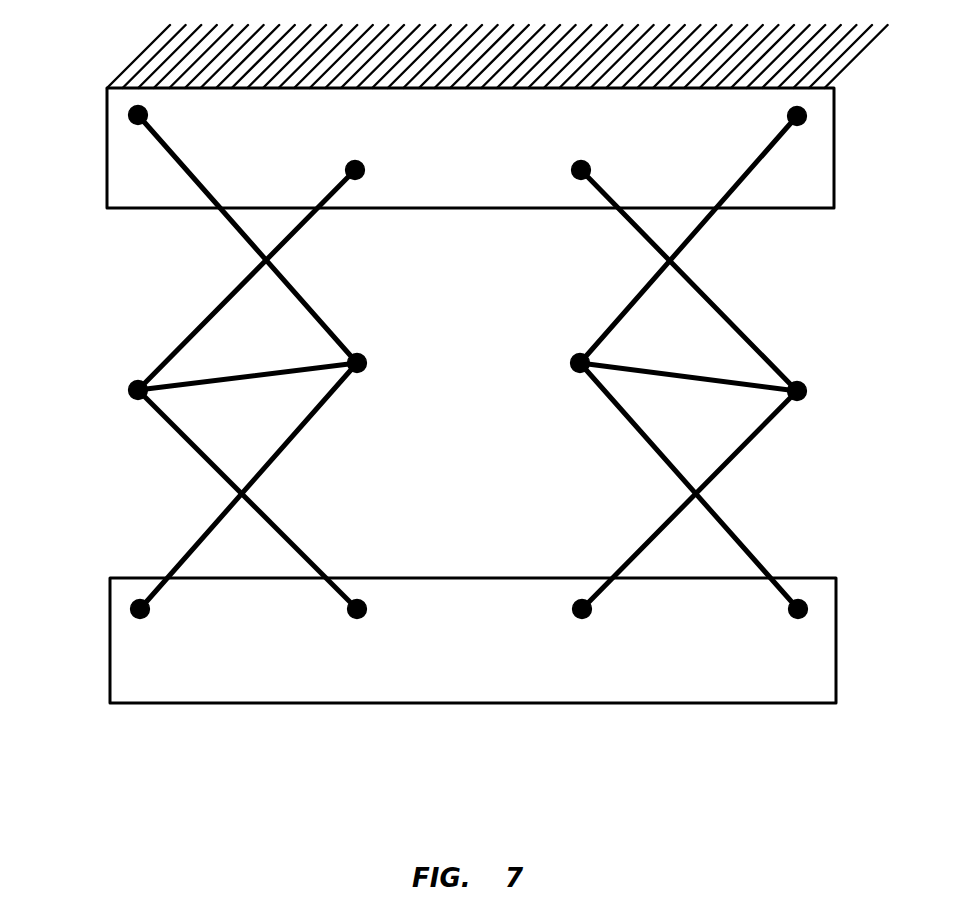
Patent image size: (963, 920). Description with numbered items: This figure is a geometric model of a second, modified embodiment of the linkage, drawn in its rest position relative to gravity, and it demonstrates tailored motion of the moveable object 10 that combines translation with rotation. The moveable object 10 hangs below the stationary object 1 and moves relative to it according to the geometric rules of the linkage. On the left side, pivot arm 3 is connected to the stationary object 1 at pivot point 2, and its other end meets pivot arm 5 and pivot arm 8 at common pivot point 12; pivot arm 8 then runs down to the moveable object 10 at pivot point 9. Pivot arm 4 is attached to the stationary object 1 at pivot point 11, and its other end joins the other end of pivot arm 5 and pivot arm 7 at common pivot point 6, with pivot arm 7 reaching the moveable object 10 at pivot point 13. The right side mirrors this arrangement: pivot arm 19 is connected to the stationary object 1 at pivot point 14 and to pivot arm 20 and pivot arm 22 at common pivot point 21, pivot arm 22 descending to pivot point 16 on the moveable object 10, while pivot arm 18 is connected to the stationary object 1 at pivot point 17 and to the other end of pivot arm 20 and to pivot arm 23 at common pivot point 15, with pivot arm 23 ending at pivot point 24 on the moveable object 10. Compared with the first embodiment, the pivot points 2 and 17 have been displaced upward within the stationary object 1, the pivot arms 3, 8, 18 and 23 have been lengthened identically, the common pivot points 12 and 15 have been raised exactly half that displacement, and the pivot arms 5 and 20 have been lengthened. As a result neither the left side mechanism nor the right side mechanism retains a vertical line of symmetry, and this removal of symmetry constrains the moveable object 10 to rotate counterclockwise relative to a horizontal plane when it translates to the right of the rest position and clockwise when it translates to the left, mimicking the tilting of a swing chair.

The stationary object 1 is at (122, 180).
The pivot point 2 is at (128, 115).
The pivot arm 3 is at (230, 223).
The pivot arm 4 is at (200, 325).
The pivot arm 5 is at (195, 381).
The common pivot point 6 is at (130, 398).
The pivot arm 7 is at (195, 447).
The pivot arm 8 is at (186, 548).
The pivot point 9 is at (130, 609).
The moveable object 10 is at (128, 676).
The pivot point 11 is at (360, 178).
The common pivot point 12 is at (365, 368).
The pivot point 13 is at (362, 600).
The pivot point 14 is at (575, 178).
The common pivot point 15 is at (573, 360).
The pivot point 16 is at (573, 602).
The pivot point 17 is at (805, 116).
The pivot arm 18 is at (697, 233).
The pivot arm 19 is at (735, 323).
The pivot arm 20 is at (740, 382).
The common pivot point 21 is at (803, 396).
The pivot arm 22 is at (747, 443).
The pivot arm 23 is at (733, 530).
The pivot point 24 is at (800, 600).